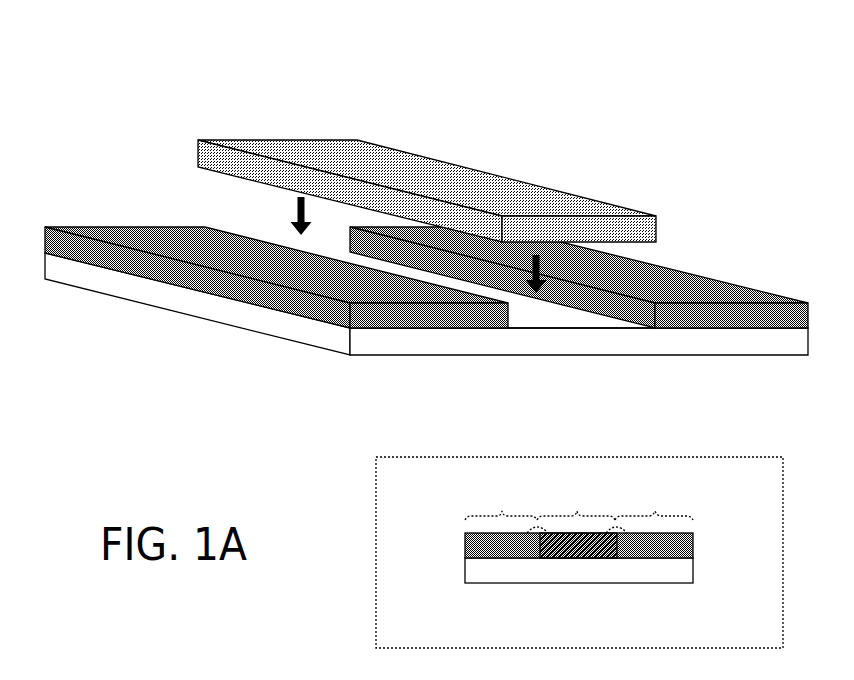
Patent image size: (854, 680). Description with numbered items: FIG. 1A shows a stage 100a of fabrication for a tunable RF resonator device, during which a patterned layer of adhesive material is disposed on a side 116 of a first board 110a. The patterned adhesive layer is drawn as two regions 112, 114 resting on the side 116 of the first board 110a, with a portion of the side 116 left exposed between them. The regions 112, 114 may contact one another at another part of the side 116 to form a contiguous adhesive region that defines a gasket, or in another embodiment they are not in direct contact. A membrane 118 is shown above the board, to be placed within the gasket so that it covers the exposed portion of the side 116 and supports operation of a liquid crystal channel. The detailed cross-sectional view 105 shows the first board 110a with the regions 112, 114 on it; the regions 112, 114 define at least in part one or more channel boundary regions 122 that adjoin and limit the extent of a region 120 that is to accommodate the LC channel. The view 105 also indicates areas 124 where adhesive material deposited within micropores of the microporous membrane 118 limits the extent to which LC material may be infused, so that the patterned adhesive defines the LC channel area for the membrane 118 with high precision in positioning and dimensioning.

The stage of fabrication 100a is at (140, 77).
The first board 110a is at (350, 355).
The adhesive region 112 is at (400, 300).
The adhesive region 114 is at (699, 300).
The side of first board 116 is at (545, 316).
The membrane 118 is at (499, 200).
The detailed cross-sectional view 105 is at (579, 540).
The region to accommodate LC channel 120 is at (577, 518).
The channel boundary regions 122 is at (579, 499).
The areas with adhesive in micropores 124 is at (535, 564).